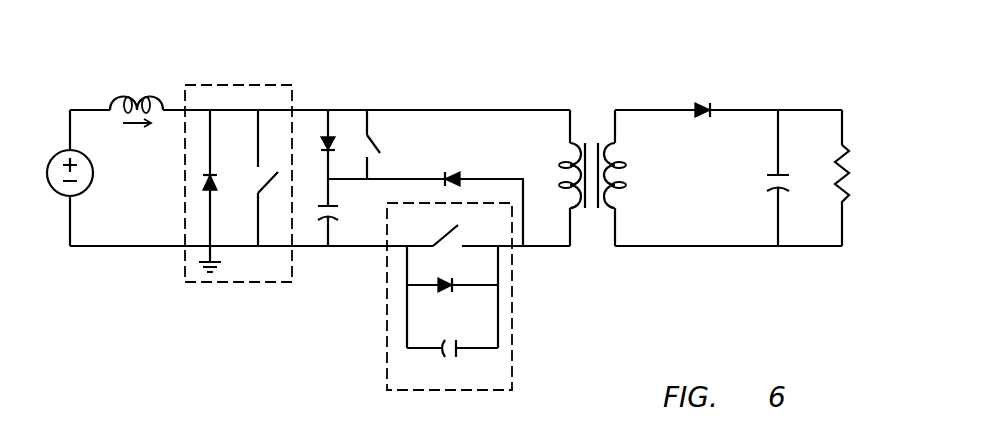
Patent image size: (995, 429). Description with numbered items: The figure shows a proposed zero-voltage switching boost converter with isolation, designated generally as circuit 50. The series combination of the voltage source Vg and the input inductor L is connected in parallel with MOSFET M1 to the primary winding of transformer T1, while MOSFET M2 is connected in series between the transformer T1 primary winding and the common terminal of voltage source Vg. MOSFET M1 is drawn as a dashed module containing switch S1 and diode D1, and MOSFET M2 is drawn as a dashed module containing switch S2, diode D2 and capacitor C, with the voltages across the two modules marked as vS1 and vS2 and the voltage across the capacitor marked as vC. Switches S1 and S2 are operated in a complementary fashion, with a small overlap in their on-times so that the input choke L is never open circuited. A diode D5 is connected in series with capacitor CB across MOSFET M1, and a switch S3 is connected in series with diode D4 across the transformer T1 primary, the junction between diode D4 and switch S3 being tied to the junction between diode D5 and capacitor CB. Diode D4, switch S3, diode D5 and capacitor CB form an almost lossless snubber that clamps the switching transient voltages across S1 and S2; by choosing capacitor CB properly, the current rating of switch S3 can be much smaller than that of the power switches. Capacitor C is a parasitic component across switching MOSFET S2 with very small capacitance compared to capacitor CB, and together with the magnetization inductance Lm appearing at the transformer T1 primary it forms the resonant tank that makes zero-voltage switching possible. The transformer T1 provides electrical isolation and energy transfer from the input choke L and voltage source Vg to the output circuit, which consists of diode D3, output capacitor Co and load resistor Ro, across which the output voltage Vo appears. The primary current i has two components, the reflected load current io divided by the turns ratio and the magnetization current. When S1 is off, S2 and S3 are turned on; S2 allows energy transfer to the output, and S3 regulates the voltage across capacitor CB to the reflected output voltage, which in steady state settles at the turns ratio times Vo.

The circuit 50 is at (428, 68).
The voltage source Vg is at (56, 173).
The inductor L is at (136, 98).
The voltage across S1 vS1 is at (236, 63).
The MOSFET M1 is at (238, 199).
The diode D1 is at (216, 191).
The switch S1 is at (269, 178).
The diode D5 is at (315, 158).
The capacitor CB is at (340, 226).
The switch S3 is at (379, 144).
The diode D4 is at (449, 167).
The MOSFET M2 is at (466, 296).
The switch S2 is at (456, 234).
The voltage across S2 vS2 is at (534, 272).
The diode D2 is at (452, 297).
The capacitor C is at (452, 360).
The voltage across capacitor C vC is at (446, 408).
The transformer primary current i is at (543, 97).
The magnetization inductance Lm is at (555, 175).
The transformer T1 is at (603, 172).
The output current io is at (676, 99).
The diode D3 is at (705, 126).
The capacitor Co is at (764, 178).
The load resistor Ro is at (824, 177).
The output voltage Vo is at (871, 179).